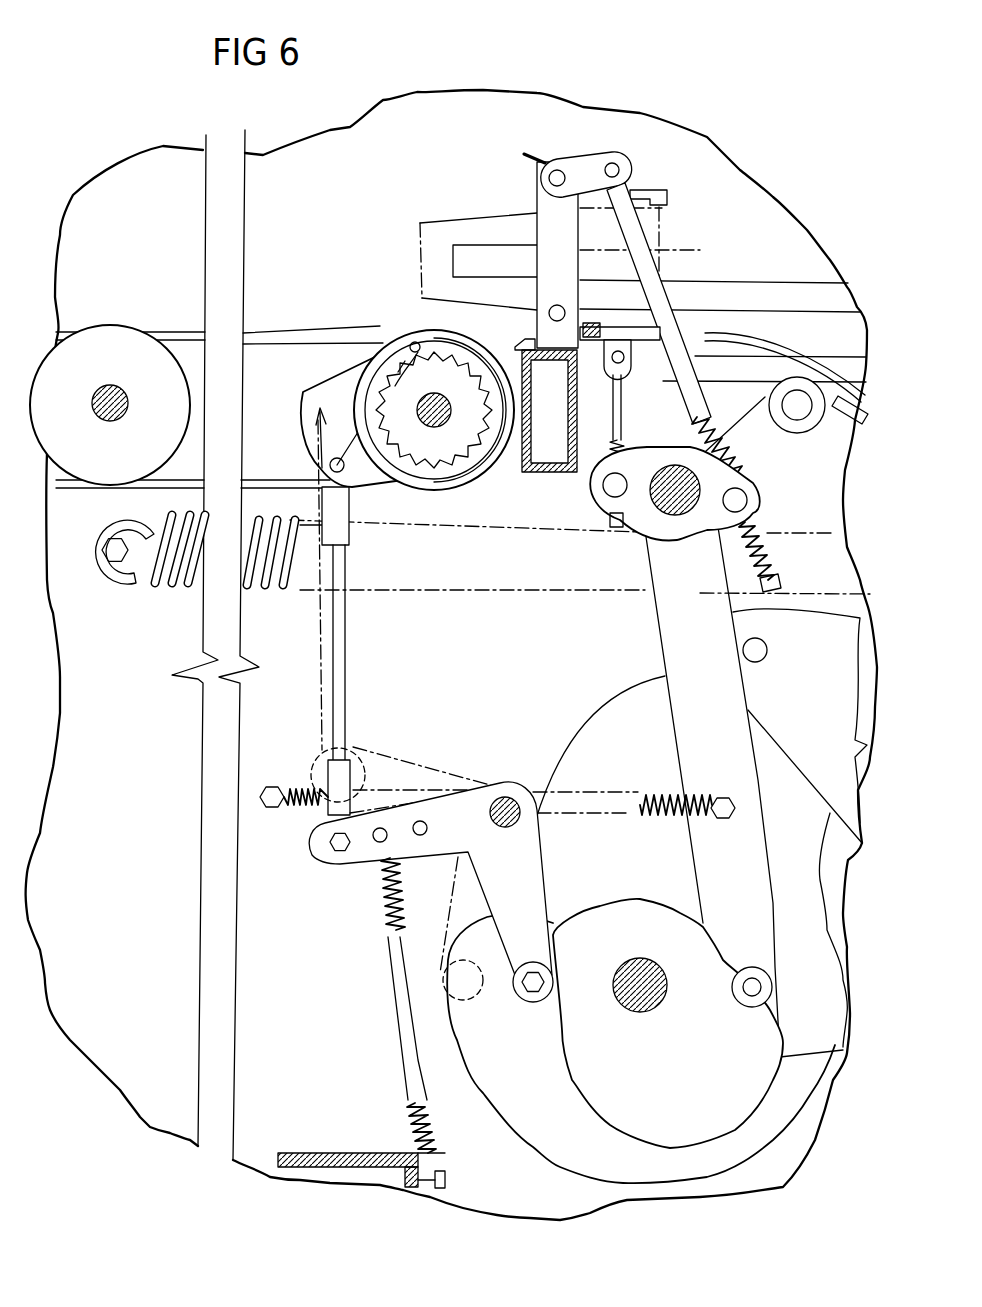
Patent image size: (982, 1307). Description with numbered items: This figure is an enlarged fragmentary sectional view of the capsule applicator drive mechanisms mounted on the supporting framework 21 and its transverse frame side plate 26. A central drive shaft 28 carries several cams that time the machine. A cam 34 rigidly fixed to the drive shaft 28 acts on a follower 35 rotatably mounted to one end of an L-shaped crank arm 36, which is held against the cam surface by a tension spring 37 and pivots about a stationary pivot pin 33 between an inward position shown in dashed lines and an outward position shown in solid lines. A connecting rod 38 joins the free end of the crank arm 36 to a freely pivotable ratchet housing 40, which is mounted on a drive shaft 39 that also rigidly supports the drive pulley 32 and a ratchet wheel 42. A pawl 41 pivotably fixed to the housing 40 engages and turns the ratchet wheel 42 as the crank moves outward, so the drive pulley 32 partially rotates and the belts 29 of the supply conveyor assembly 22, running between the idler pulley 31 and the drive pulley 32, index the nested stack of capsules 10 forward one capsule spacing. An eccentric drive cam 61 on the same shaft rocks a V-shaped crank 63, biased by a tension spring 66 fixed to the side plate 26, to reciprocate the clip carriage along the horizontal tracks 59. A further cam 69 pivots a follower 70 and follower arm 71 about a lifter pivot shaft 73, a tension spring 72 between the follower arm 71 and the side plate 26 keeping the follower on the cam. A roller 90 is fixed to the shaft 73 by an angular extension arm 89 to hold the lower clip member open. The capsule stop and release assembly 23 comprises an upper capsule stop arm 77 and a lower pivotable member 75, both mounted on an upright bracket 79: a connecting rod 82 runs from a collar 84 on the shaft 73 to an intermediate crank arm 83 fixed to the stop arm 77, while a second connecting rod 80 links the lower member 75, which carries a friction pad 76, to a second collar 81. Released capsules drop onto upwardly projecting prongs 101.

The capsule 10 is at (497, 215).
The supporting framework 21 is at (312, 142).
The supply conveyor assembly 22 is at (482, 478).
The capsule stop and release assembly 23 is at (760, 490).
The frame side plate 26 is at (370, 128).
The central drive shaft 28 is at (652, 1005).
The belts 29 is at (305, 345).
The idler pulley 31 is at (92, 335).
The drive pulley 32 is at (430, 333).
The stationary pivot pin 33 is at (508, 798).
The cam 34 is at (603, 1092).
The follower 35 is at (515, 993).
The L-shaped crank arm 36 is at (535, 883).
The tension spring 37 is at (393, 930).
The connecting rod 38 is at (350, 655).
The drive shaft 39 is at (420, 420).
The ratchet housing 40 is at (330, 462).
The pawl 41 is at (400, 366).
The ratchet wheel 42 is at (382, 432).
The tracks 59 is at (750, 290).
The eccentric drive cam 61 is at (630, 700).
The V-shaped crank 63 is at (793, 615).
The tension spring 66 is at (190, 586).
The cam 69 is at (500, 1095).
The follower 70 is at (770, 993).
The follower arm 71 is at (760, 845).
The tension spring 72 is at (320, 793).
The lifter pivot shaft 73 is at (680, 470).
The lower pivotable member 75 is at (606, 340).
The friction pad 76 is at (626, 343).
The capsule stop arm 77 is at (645, 192).
The upright bracket 79 is at (547, 263).
The second connecting rod 80 is at (624, 405).
The second collar 81 is at (606, 497).
The connecting rod 82 is at (668, 314).
The intermediate crank arm 83 is at (605, 140).
The collar 84 is at (757, 507).
The angular extension arm 89 is at (757, 425).
The roller 90 is at (808, 423).
The prongs 101 is at (782, 348).